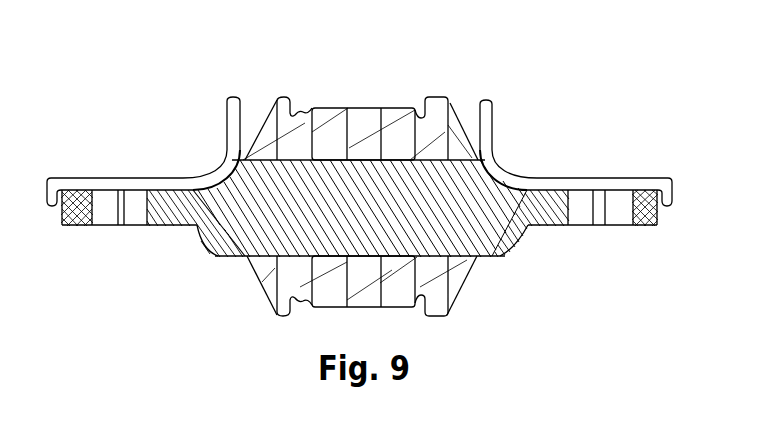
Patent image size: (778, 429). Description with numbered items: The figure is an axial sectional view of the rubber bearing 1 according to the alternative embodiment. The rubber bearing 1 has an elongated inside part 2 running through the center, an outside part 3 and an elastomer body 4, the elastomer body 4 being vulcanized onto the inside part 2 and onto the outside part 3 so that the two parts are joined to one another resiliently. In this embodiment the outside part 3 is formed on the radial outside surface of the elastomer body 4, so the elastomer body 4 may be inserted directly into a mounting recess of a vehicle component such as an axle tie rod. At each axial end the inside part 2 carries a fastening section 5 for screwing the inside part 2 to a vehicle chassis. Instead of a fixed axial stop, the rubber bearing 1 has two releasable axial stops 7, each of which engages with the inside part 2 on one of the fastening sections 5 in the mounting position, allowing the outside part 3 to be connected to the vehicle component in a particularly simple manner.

The rubber bearing 1 is at (91, 88).
The inside part 2 is at (217, 256).
The outside part 3 is at (357, 107).
The elastomer body 4 is at (395, 272).
The fastening section 5 is at (110, 230).
The releasable axial stop 7 is at (226, 158).